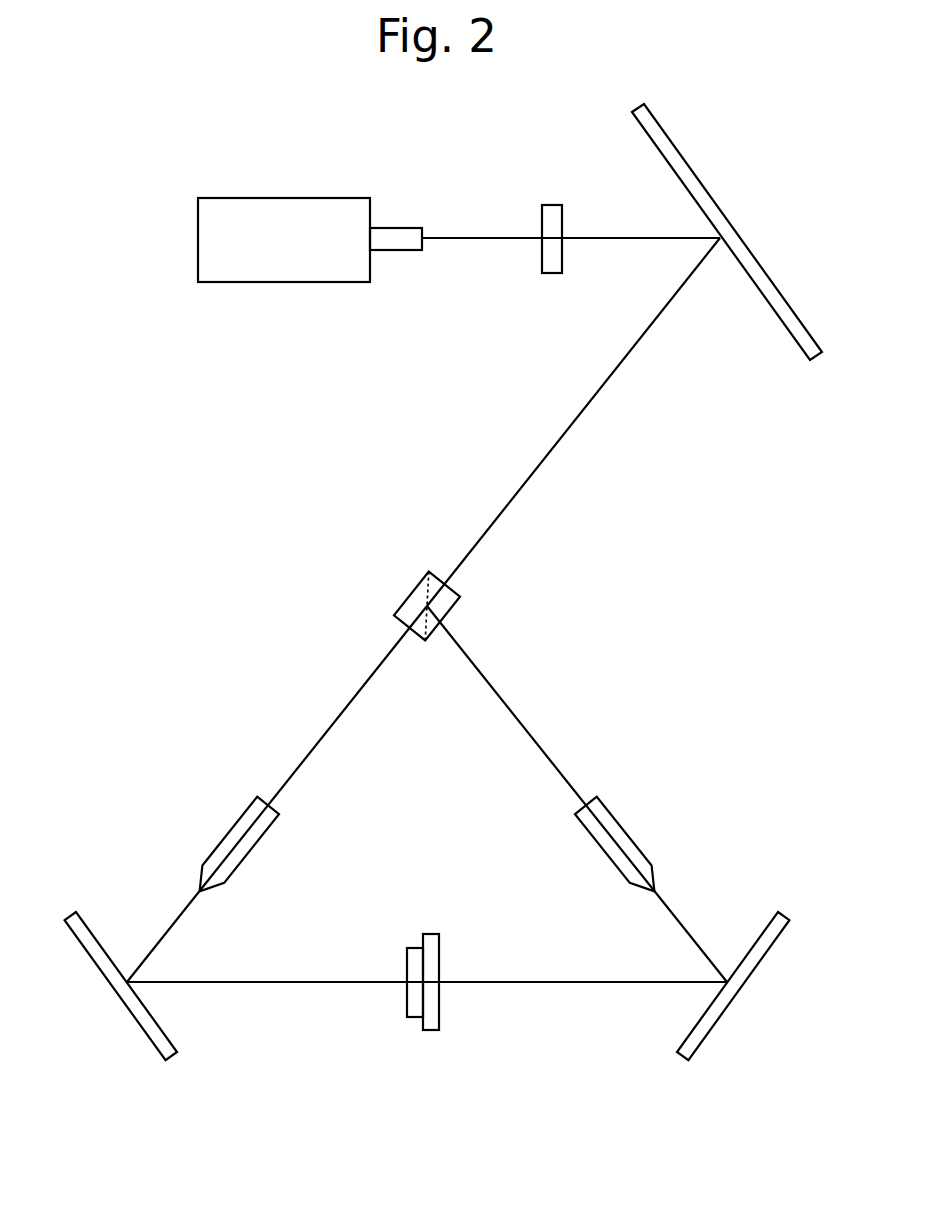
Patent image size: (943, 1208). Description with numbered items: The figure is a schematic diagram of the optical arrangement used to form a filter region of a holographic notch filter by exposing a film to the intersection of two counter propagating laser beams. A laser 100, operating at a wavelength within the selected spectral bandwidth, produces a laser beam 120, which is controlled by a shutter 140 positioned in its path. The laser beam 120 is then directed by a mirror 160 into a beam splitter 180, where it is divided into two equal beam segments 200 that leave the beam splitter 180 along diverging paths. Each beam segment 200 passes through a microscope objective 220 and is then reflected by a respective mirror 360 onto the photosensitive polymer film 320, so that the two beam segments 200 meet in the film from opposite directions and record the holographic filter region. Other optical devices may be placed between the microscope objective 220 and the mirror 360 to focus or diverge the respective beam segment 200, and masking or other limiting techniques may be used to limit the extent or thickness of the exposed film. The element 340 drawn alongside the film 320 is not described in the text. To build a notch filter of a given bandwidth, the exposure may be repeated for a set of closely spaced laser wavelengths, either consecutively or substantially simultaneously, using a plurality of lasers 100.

The laser 100 is at (251, 197).
The laser beam 120 is at (621, 237).
The shutter 140 is at (553, 205).
The mirror 160 is at (692, 168).
The beam splitter 180 is at (404, 602).
The beam segments 200 is at (317, 740).
The microscope objective 220 is at (222, 838).
The photosensitive polymer film 320 is at (407, 1008).
The optical element 340 is at (439, 1010).
The mirror 360 is at (132, 1018).